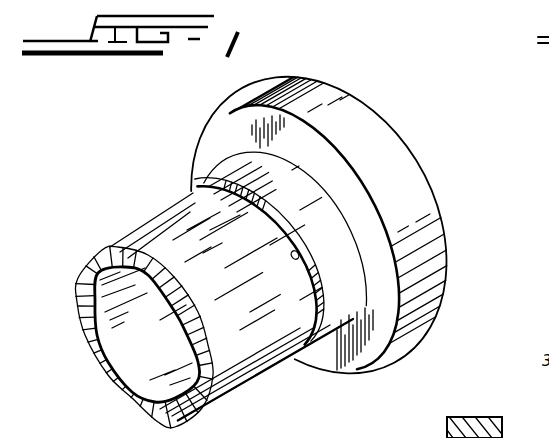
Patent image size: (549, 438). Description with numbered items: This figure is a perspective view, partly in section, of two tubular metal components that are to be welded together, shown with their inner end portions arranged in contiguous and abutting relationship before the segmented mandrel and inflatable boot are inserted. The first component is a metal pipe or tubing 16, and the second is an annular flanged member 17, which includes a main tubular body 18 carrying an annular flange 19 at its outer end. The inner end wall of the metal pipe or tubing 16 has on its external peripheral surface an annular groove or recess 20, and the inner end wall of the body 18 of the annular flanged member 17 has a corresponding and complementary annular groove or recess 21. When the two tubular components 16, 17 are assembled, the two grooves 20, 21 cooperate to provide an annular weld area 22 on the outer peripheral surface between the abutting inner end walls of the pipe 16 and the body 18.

The metal pipe or tubing 16 is at (238, 388).
The annular flanged member 17 is at (446, 255).
The main tubular body 18 is at (335, 325).
The annular flange 19 is at (423, 192).
The annular groove or recess 20 is at (292, 260).
The annular groove or recess 21 is at (284, 233).
The annular weld area 22 is at (254, 201).